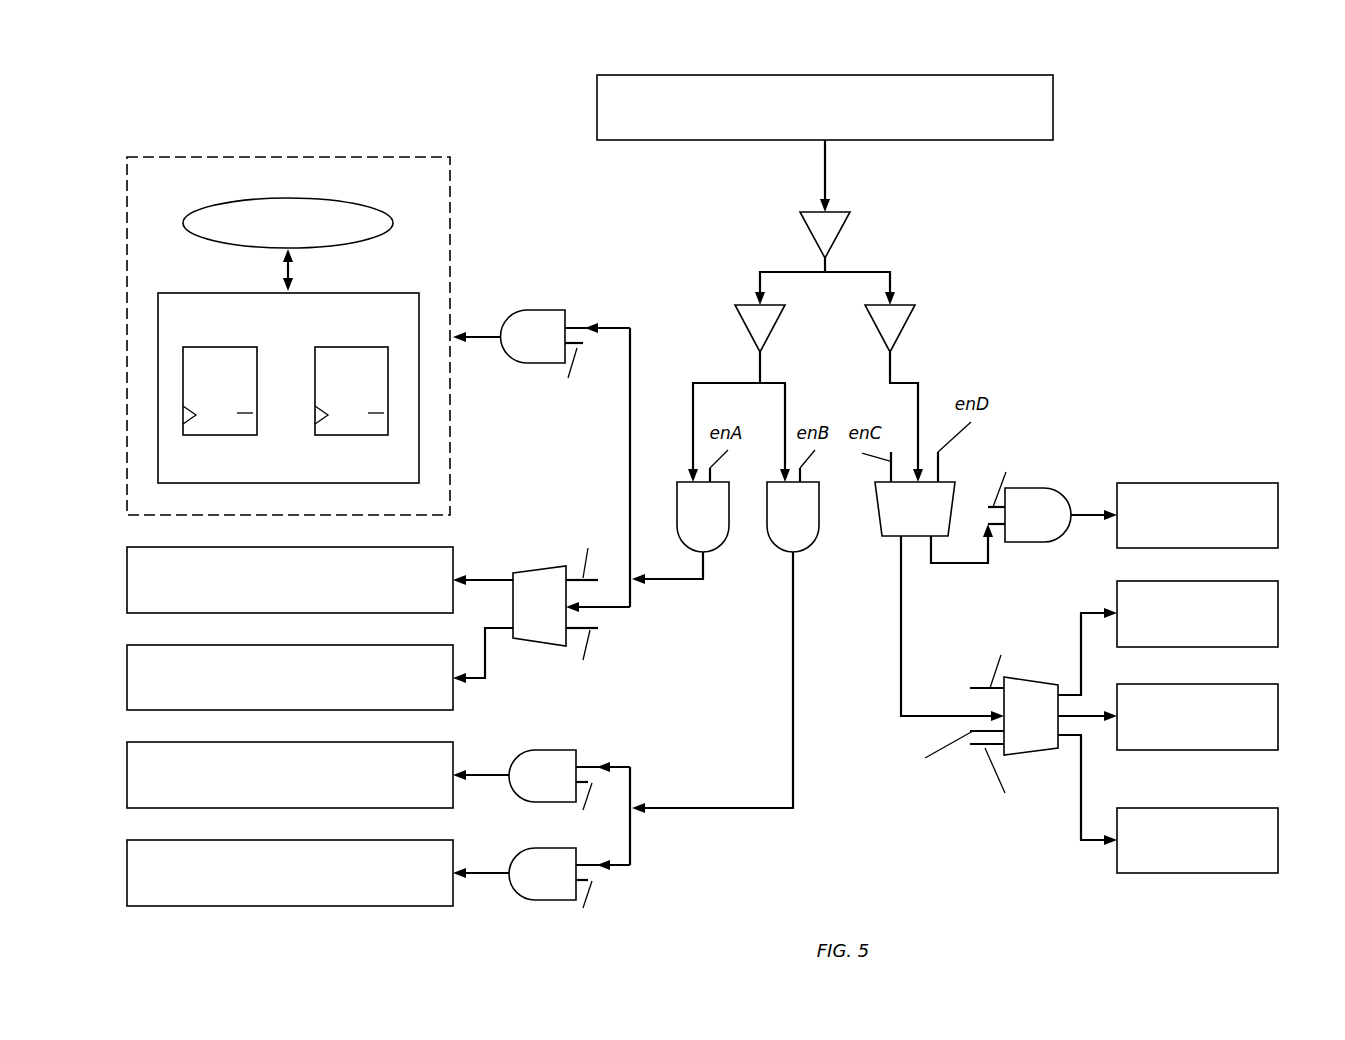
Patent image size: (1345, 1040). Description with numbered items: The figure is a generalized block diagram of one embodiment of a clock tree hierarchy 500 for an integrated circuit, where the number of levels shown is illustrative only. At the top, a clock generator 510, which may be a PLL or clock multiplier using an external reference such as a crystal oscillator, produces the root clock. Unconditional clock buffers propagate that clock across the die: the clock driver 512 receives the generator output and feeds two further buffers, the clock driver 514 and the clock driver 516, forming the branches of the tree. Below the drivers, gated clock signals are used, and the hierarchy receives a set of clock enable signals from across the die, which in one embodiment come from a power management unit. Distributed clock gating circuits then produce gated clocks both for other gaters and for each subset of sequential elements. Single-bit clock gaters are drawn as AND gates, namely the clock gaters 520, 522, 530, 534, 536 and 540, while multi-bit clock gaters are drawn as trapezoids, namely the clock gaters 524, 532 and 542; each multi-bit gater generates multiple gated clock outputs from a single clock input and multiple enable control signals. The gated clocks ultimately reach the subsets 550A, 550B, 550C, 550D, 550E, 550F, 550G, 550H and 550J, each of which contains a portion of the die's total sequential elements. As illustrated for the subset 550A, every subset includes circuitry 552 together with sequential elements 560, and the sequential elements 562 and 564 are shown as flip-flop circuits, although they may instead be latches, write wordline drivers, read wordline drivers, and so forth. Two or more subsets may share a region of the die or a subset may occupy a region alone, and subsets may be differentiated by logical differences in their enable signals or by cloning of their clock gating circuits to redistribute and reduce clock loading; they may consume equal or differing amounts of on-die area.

The clock tree hierarchy 500 is at (1246, 121).
The clock generator 510 is at (825, 107).
The clock driver 512 is at (840, 233).
The clock driver 514 is at (745, 327).
The clock driver 516 is at (905, 326).
The clock gater 520 is at (500, 288).
The clock gater 522 is at (725, 647).
The clock gater 524 is at (939, 601).
The clock gater 530 is at (541, 358).
The clock gater 532 is at (541, 603).
The clock gater 534 is at (541, 795).
The clock gater 536 is at (541, 893).
The clock gater 540 is at (1052, 493).
The clock gater 542 is at (1010, 726).
The subset 550A is at (288, 336).
The subset 550B is at (290, 580).
The subset 550C is at (290, 677).
The subset 550D is at (290, 775).
The subset 550E is at (290, 873).
The subset 550F is at (1197, 515).
The subset 550G is at (1197, 614).
The subset 550H is at (1197, 717).
The subset 550J is at (1197, 840).
The circuitry 552 is at (288, 223).
The sequential elements 560 is at (288, 388).
The sequential element 562 is at (220, 435).
The sequential element 564 is at (356, 435).